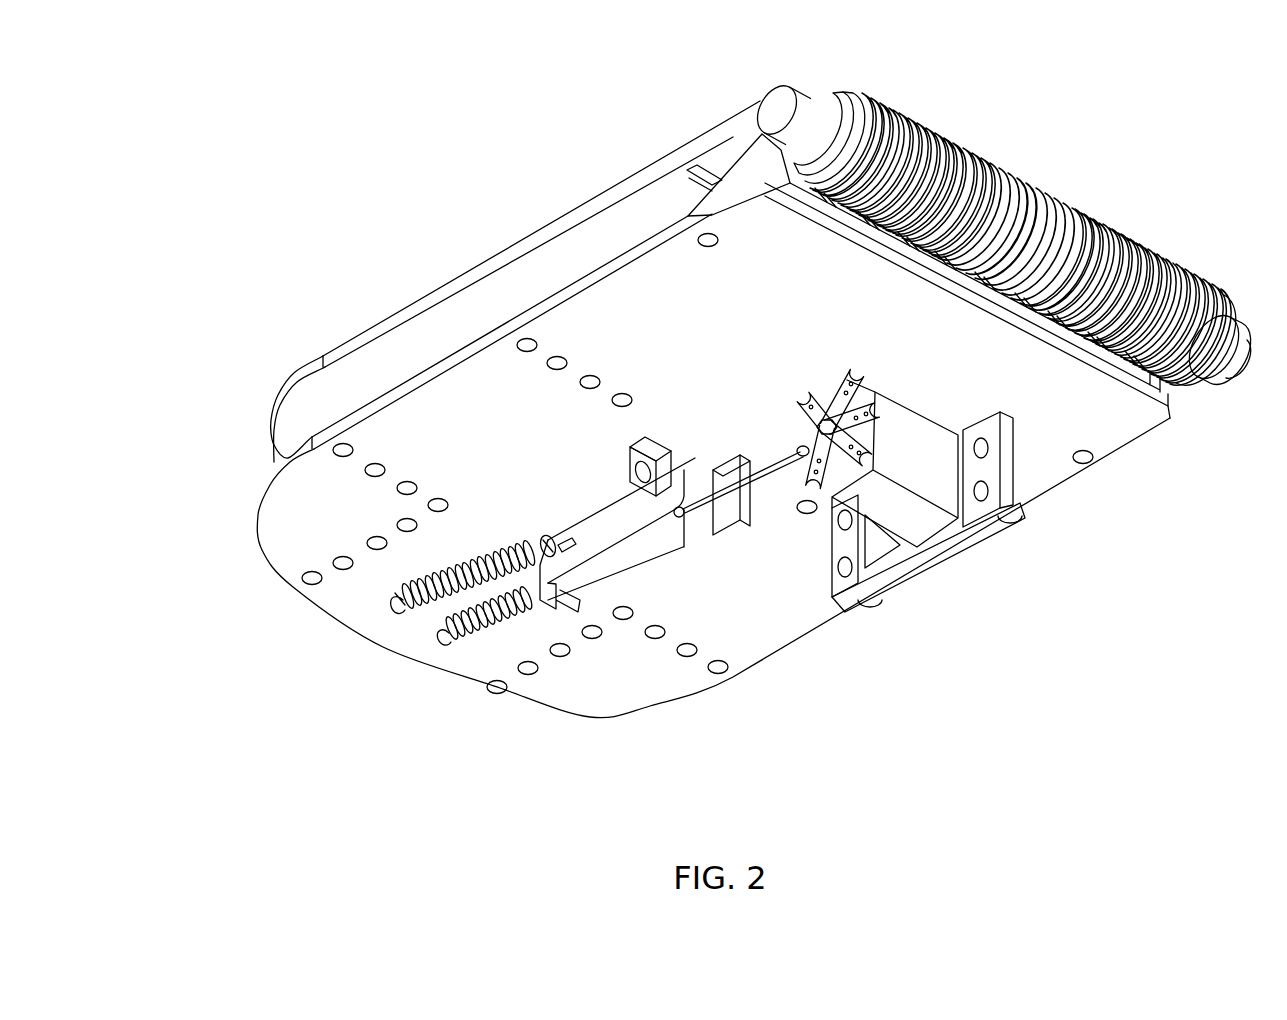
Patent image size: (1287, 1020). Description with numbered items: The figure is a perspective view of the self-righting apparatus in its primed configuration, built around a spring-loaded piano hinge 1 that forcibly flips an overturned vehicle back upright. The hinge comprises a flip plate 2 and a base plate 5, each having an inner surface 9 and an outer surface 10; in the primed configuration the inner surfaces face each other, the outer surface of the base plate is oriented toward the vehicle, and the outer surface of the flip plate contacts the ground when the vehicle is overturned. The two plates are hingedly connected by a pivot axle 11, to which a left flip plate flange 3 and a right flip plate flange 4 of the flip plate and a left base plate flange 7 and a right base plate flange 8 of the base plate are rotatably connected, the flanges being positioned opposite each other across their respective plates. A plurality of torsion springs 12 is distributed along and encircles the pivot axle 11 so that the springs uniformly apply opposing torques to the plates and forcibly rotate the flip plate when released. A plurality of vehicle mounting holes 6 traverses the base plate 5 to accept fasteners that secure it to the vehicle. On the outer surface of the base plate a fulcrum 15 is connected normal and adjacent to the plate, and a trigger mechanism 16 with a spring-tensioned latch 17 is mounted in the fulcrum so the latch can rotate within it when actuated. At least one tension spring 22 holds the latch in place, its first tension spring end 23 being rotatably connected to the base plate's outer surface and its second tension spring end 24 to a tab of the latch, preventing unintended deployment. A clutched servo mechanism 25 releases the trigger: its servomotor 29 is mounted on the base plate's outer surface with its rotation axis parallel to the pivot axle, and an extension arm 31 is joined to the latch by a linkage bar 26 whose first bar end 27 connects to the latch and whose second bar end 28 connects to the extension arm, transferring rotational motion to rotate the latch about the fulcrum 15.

The spring-loaded piano hinge 1 is at (268, 240).
The flip plate 2 is at (597, 168).
The left flip plate flange 3 is at (991, 240).
The right flip plate flange 4 is at (1218, 304).
The base plate 5 is at (378, 652).
The plurality of vehicle mounting holes 6 is at (629, 404).
The left base plate flange 7 is at (825, 88).
The right base plate flange 8 is at (1212, 390).
The inner surface 9 is at (336, 412).
The outer surface 10 is at (785, 240).
The pivot axle 11 is at (778, 95).
The plurality of torsion springs 12 is at (962, 152).
The fulcrum 15 is at (745, 525).
The trigger mechanism 16 is at (553, 468).
The spring-tensioned latch 17 is at (673, 576).
The tension spring 22 is at (492, 561).
The first tension spring end 23 is at (428, 622).
The second tension spring end 24 is at (548, 534).
The clutched servo mechanism 25 is at (880, 368).
The linkage bar 26 is at (745, 455).
The first bar end 27 is at (672, 512).
The second bar end 28 is at (796, 446).
The servomotor 29 is at (918, 430).
The extension arm 31 is at (812, 392).